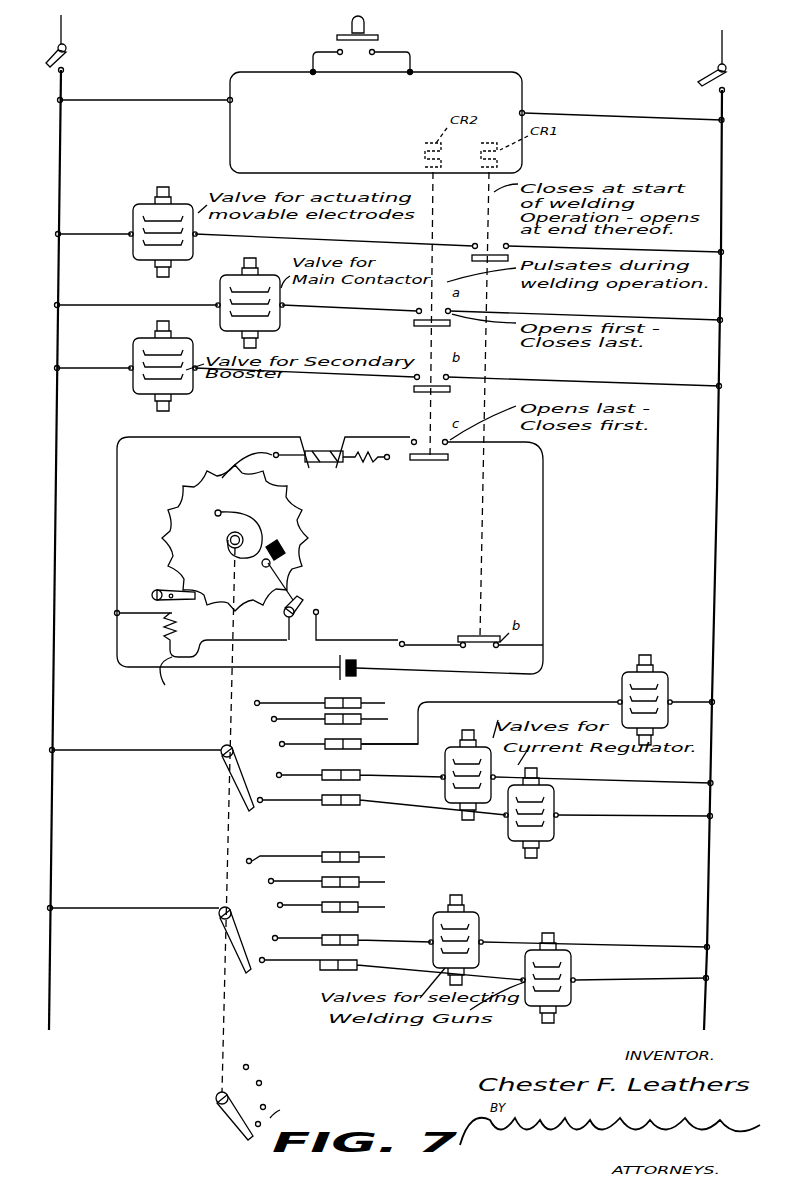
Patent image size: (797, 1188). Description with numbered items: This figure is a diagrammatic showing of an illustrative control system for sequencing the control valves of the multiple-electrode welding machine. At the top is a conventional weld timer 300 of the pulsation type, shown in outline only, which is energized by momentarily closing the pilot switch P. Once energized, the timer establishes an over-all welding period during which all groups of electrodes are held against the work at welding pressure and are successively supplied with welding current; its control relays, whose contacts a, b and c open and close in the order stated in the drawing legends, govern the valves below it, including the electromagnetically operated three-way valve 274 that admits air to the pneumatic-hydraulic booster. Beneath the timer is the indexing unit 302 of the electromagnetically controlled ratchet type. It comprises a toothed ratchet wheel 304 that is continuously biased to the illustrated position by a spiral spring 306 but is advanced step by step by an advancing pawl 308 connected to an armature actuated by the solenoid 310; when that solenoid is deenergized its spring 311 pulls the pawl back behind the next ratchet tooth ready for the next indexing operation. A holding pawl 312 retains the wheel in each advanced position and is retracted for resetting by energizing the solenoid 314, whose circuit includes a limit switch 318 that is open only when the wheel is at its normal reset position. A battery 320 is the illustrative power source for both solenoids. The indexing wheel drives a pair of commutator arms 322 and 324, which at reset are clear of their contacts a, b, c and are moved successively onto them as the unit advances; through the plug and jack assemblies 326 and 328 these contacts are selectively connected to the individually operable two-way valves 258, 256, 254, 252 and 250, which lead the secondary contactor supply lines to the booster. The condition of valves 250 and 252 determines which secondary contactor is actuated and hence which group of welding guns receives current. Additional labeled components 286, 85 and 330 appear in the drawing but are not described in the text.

The pilot switch P is at (372, 27).
The weld timer 300 is at (483, 78).
The valve for actuating movable electrodes 286 is at (156, 204).
The valve for main contactor 85 is at (218, 284).
The three-way valve 274 is at (132, 354).
The indexing unit 302 is at (288, 525).
The ratchet wheel 304 is at (290, 537).
The spiral spring 306 is at (232, 511).
The advancing pawl 308 is at (246, 450).
The solenoid 310 is at (312, 451).
The spring 311 is at (369, 463).
The holding pawl 312 is at (165, 591).
The solenoid 314 is at (161, 680).
The limit switch 318 is at (300, 602).
The battery 320 is at (349, 669).
The commutator arm 322 is at (240, 768).
The commutator arm 324 is at (222, 937).
The plug and jack assembly 326 is at (350, 752).
The plug and jack assembly 328 is at (356, 860).
The selector arm 330 is at (222, 1116).
The two-way valve 258 is at (642, 672).
The two-way valve 256 is at (445, 795).
The two-way valve 254 is at (556, 801).
The two-way valve 252 is at (485, 926).
The two-way valve 250 is at (575, 969).